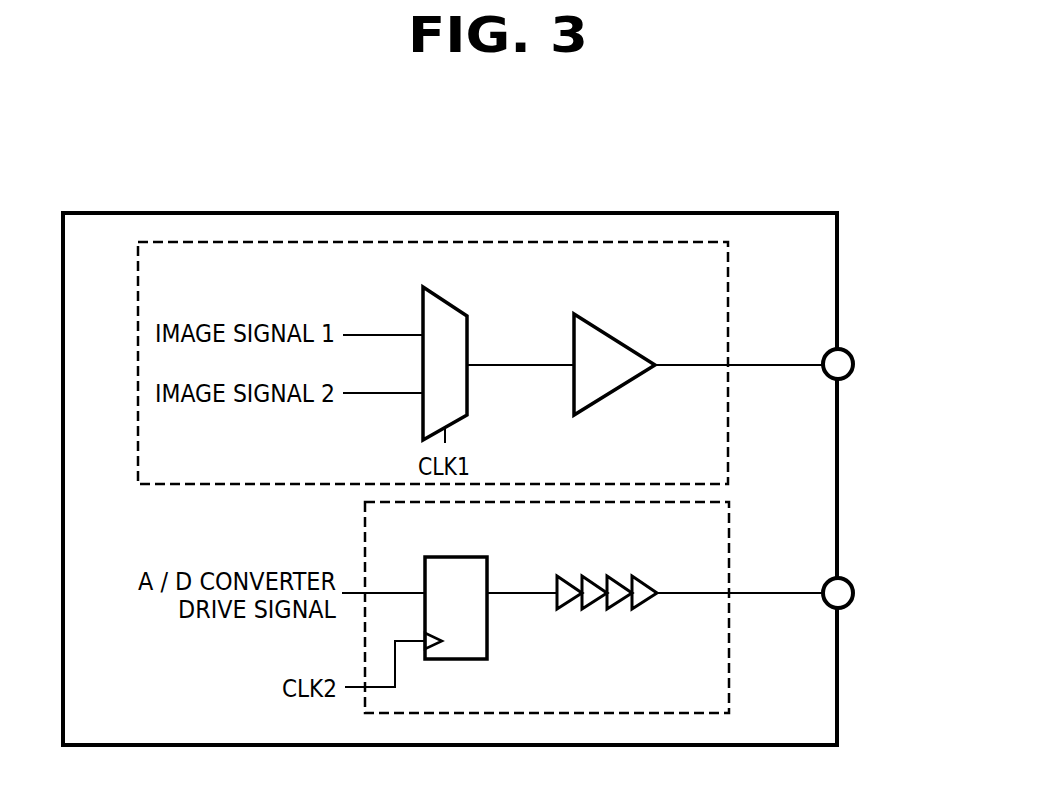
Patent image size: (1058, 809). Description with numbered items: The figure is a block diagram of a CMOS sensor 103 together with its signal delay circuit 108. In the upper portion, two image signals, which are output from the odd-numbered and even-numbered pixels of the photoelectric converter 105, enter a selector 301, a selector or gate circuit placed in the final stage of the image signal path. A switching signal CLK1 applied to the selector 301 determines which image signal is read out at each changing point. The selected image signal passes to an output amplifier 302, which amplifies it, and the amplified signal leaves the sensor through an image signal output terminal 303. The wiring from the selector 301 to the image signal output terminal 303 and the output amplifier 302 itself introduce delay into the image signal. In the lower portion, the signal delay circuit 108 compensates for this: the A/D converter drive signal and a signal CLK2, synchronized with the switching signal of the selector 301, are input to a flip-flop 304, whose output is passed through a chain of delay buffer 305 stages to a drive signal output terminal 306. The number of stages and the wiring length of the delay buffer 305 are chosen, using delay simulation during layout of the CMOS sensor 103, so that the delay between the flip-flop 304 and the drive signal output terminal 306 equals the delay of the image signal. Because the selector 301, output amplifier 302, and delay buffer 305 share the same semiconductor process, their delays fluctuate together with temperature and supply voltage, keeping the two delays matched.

The CMOS sensor 103 is at (789, 212).
The photoelectric converter 105 is at (728, 265).
The signal delay circuit 108 is at (729, 514).
The selector 301 is at (446, 294).
The output amplifier 302 is at (588, 314).
The image signal output terminal 303 is at (854, 362).
The flip-flop 304 is at (470, 555).
The delay buffer 305 is at (607, 574).
The drive signal output terminal 306 is at (854, 590).